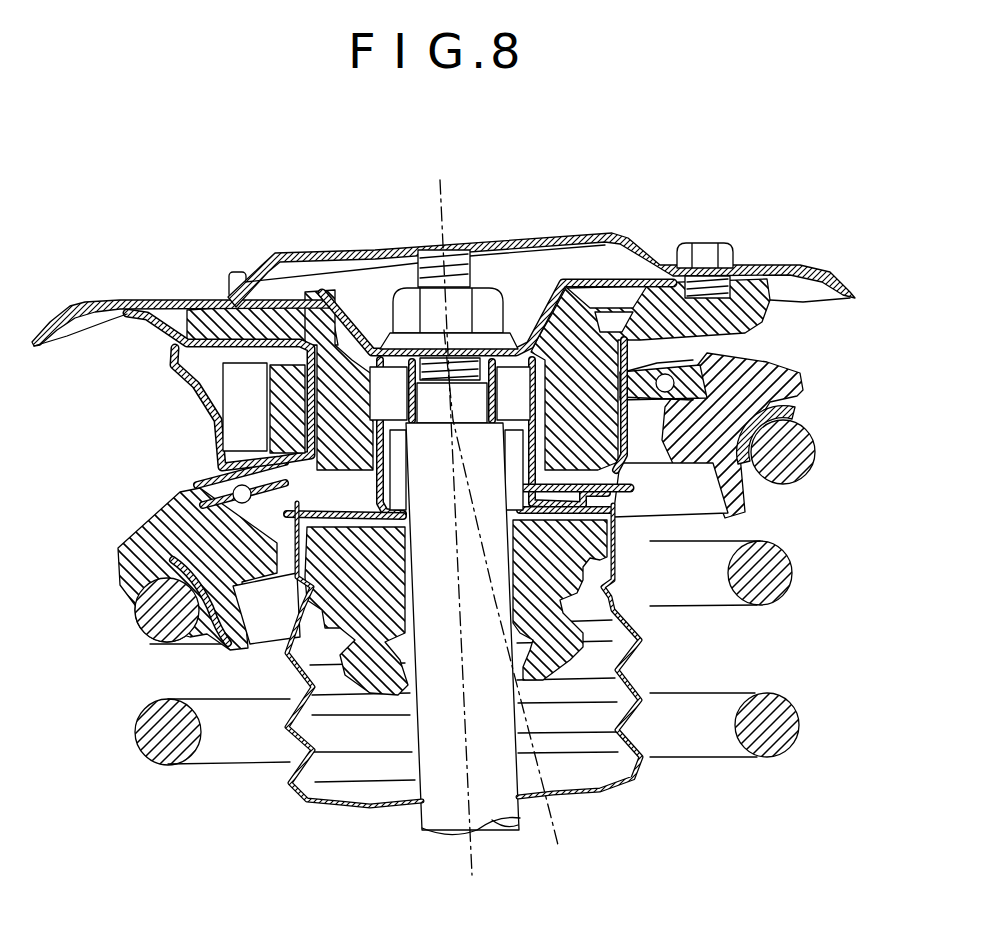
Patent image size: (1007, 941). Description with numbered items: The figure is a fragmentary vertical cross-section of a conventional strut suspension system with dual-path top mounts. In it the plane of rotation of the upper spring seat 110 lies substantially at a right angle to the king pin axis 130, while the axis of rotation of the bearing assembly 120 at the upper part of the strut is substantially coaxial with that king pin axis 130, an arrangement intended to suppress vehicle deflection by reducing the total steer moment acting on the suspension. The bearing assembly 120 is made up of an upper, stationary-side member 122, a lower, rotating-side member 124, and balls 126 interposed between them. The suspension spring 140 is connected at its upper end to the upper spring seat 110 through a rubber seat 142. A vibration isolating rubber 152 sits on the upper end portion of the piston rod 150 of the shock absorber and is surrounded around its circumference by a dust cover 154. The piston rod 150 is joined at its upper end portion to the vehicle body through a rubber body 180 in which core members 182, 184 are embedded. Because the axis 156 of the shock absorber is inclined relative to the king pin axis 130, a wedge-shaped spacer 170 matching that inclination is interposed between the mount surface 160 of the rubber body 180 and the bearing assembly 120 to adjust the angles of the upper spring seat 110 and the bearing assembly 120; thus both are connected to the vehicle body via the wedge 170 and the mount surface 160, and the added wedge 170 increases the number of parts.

The upper spring seat 110 is at (800, 393).
The bearing assembly 120 is at (770, 357).
The upper, stationary-side member 122 is at (189, 480).
The lower, rotating-side member 124 is at (190, 516).
The balls 126 is at (195, 476).
The king pin axis 130 is at (557, 833).
The suspension spring 140 is at (797, 718).
The rubber seat 142 is at (133, 577).
The piston rod 150 is at (430, 813).
The vibration isolating rubber 152 is at (637, 652).
The dust cover 154 is at (640, 773).
The axis of the shock absorber 156 is at (477, 863).
The mount surface 160 is at (173, 378).
The spacer (wedge) 170 is at (195, 419).
The rubber body 180 is at (578, 282).
The core member 182 is at (618, 443).
The core member 184 is at (620, 487).